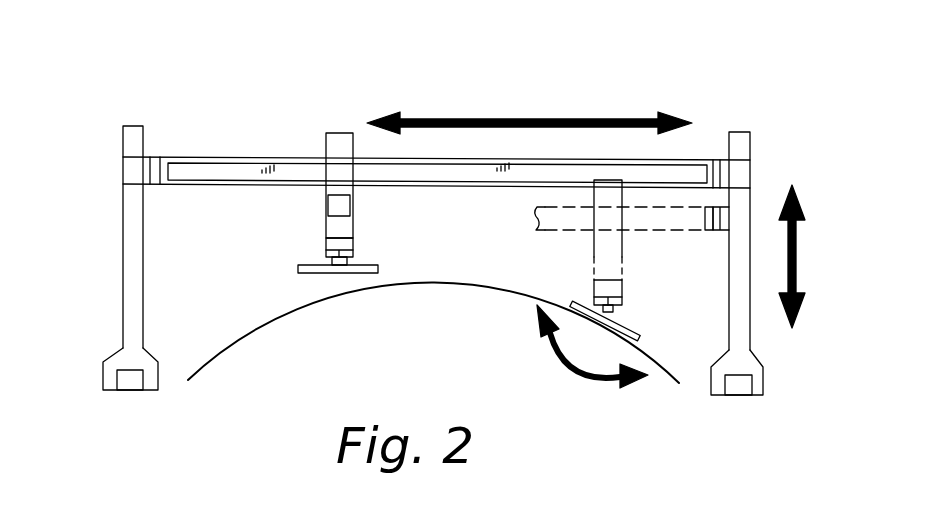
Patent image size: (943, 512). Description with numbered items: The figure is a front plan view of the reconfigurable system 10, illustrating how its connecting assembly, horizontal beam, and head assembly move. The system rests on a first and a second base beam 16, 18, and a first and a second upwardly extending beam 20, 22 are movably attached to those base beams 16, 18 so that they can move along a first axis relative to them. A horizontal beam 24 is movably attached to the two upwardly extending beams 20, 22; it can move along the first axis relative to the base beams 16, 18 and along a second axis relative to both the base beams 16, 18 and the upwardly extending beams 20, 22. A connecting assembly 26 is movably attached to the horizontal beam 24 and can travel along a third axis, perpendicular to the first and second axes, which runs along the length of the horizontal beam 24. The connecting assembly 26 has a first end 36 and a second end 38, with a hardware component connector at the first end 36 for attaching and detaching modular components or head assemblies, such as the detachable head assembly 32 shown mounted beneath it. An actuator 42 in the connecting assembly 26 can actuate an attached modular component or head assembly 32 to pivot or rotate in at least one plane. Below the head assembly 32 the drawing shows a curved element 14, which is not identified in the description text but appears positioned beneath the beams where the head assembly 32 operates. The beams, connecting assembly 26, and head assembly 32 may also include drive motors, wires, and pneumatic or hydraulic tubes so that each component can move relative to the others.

The reconfigurable system 10 is at (793, 70).
The workpiece 14 is at (256, 331).
The first base beam 16 is at (130, 383).
The second base beam 18 is at (742, 387).
The first upwardly extending beam 20 is at (127, 270).
The second upwardly extending beam 22 is at (733, 275).
The horizontal beam 24 is at (195, 172).
The connecting assembly 26 is at (343, 228).
The detachable head assembly 32 is at (377, 267).
The first end 36 is at (328, 242).
The second end 38 is at (335, 133).
The actuator 42 is at (313, 198).